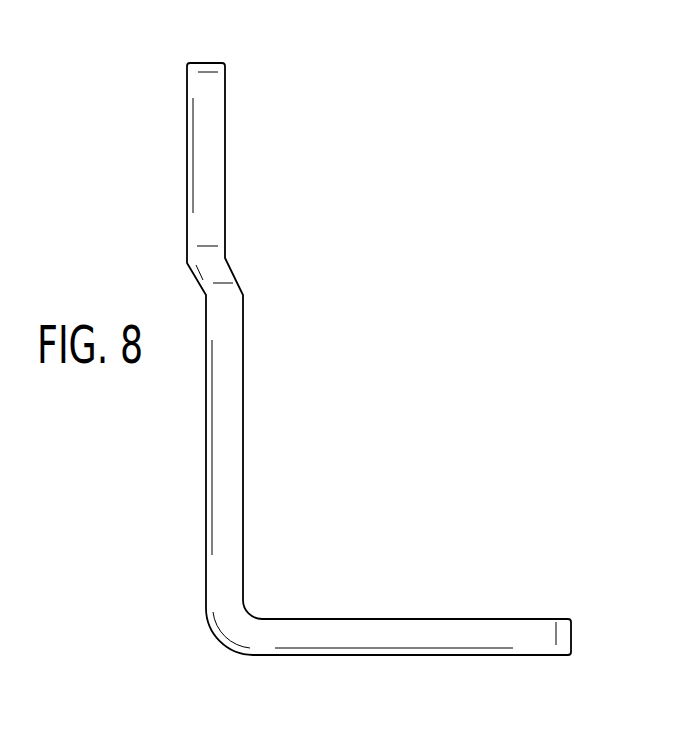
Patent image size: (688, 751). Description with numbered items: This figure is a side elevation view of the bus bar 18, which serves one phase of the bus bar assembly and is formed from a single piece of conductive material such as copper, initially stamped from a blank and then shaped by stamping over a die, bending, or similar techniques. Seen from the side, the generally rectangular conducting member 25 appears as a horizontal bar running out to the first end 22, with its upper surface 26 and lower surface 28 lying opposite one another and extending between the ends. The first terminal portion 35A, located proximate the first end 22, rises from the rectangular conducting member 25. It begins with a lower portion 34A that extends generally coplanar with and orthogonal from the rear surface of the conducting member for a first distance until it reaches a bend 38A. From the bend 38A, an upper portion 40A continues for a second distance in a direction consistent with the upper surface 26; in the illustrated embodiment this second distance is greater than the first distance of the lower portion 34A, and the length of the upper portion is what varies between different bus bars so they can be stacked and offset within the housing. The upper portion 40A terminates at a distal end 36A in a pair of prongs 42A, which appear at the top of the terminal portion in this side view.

The bus bar 18 is at (506, 314).
The first end 22 is at (487, 630).
The generally rectangular conducting member 25 is at (366, 616).
The upper surface 26 is at (445, 617).
The lower surface 28 is at (513, 656).
The lower portion 34A is at (277, 661).
The first terminal portion 35A is at (253, 424).
The distal end 36A is at (208, 49).
The bend 38A is at (228, 615).
The upper portion 40A is at (225, 455).
The pair of prongs 42A is at (208, 161).